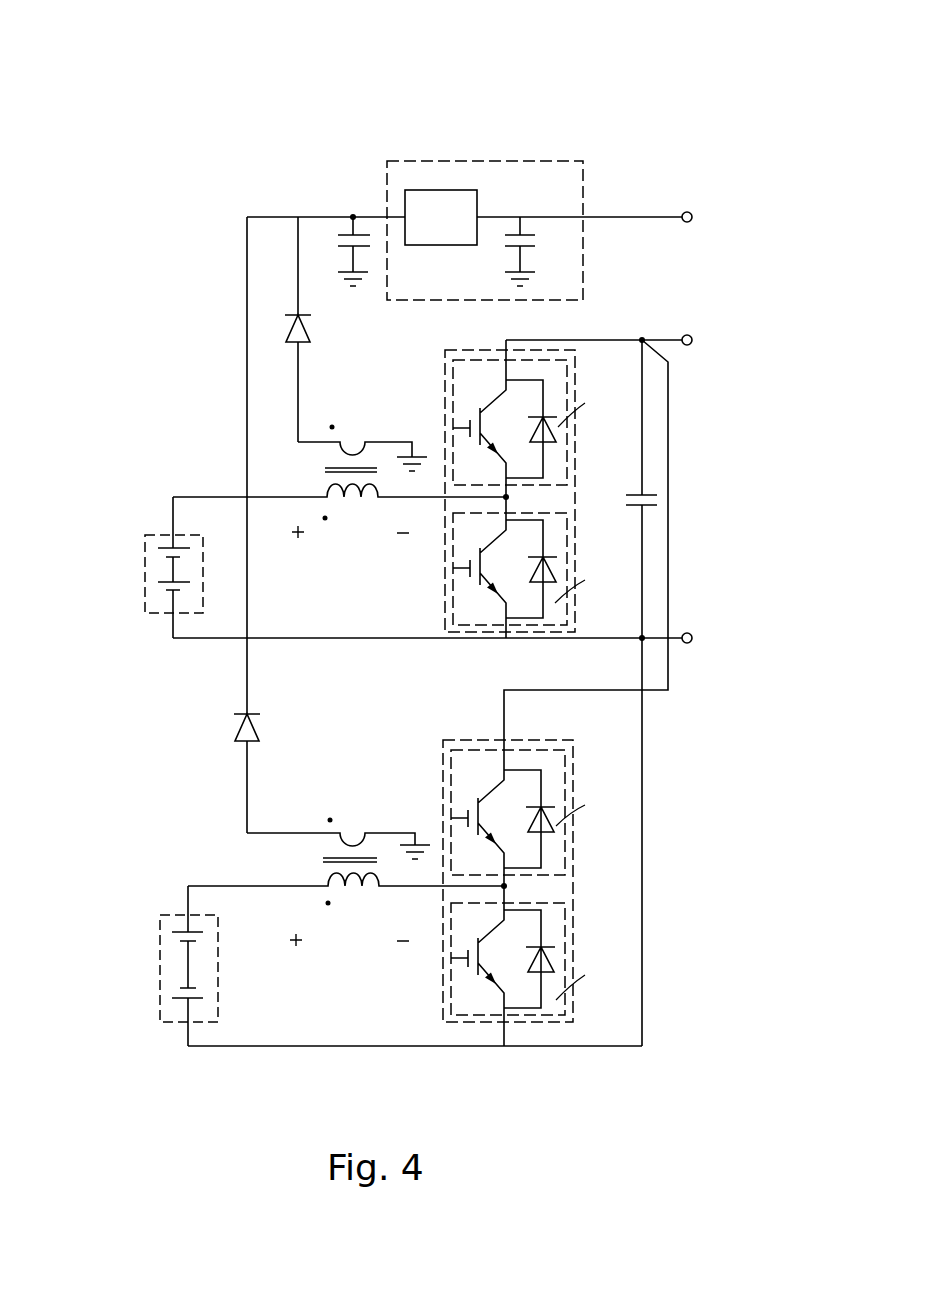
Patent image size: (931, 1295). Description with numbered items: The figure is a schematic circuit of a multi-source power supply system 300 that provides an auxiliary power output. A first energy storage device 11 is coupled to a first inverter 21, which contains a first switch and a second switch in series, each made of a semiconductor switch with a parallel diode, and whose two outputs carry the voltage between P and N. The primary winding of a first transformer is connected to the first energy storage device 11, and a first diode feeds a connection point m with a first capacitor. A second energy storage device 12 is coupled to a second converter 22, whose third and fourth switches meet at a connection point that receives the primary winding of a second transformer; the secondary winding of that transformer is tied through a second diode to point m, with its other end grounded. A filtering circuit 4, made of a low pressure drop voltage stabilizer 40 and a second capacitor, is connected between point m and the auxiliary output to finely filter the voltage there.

The power supply system 300 is at (570, 64).
The low pressure drop voltage stabilizer (LDO) 40 is at (430, 198).
The filtering circuit 4 is at (522, 175).
The first energy storage device 11 is at (145, 588).
The second energy storage device 12 is at (160, 975).
The first inverter 21 is at (575, 497).
The second converter 22 is at (573, 898).